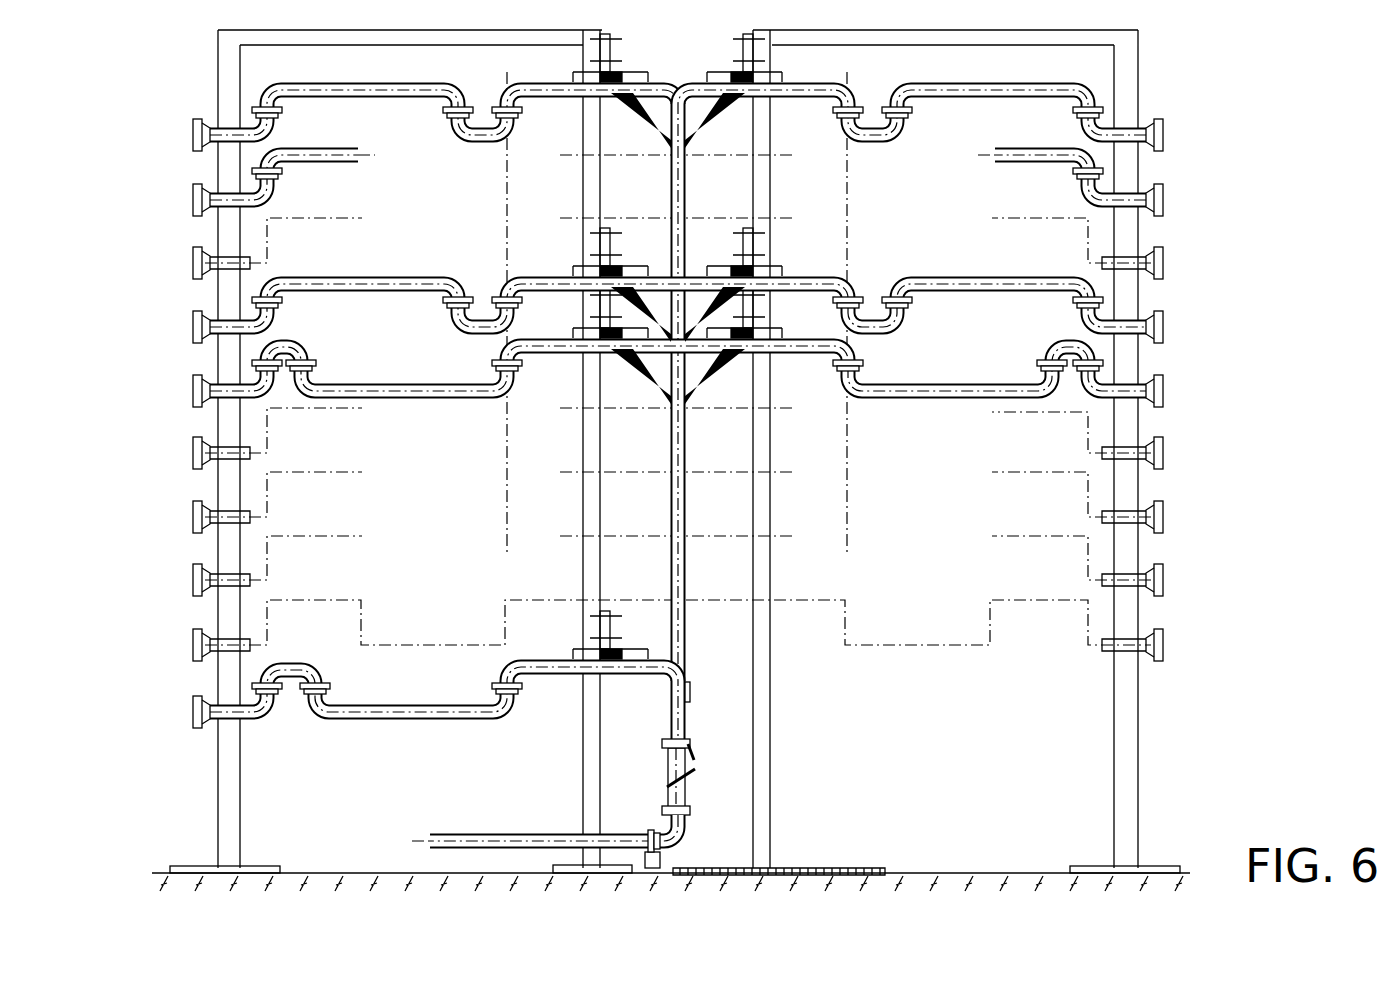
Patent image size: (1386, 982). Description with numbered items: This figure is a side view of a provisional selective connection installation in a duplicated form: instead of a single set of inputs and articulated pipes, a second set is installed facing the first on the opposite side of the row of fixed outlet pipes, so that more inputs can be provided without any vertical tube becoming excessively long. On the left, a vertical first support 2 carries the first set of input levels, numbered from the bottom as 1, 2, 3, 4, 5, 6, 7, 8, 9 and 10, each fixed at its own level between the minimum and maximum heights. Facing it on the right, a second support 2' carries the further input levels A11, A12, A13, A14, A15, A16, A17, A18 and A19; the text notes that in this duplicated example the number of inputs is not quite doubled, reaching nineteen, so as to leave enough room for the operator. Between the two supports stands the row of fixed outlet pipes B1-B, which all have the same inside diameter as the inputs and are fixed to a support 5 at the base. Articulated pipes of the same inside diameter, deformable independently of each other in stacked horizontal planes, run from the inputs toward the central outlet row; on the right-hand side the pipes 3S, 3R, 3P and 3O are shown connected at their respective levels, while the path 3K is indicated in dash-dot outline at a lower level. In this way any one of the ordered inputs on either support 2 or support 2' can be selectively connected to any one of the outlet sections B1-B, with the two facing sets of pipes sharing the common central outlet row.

The gas conduit 1 is at (160, 715).
The vertical first support 2 is at (381, 451).
The frame 2' is at (966, 451).
The tapping point 3 is at (160, 583).
The tapping point 4 is at (160, 520).
The support 5 is at (160, 456).
The gas conduit 6 is at (160, 394).
The gas conduit 7 is at (160, 330).
The tapping point 8 is at (160, 266).
The gas conduit 9 is at (160, 203).
The gas conduit 10 is at (160, 138).
The outlet A11 is at (1187, 647).
The outlet A12 is at (1187, 582).
The outlet A13 is at (1187, 519).
The outlet A14 is at (1187, 455).
The outlet A15 is at (1187, 393).
The outlet A16 is at (1187, 329).
The outlet A17 is at (1187, 265).
The outlet A18 is at (1187, 202).
The outlet A19 is at (1187, 137).
The conduit path 3K is at (852, 621).
The conduit 3O is at (957, 405).
The conduit 3P is at (987, 274).
The conduit 3R is at (1030, 165).
The conduit 3S is at (975, 84).
The second fixed sections B1-B is at (690, 797).